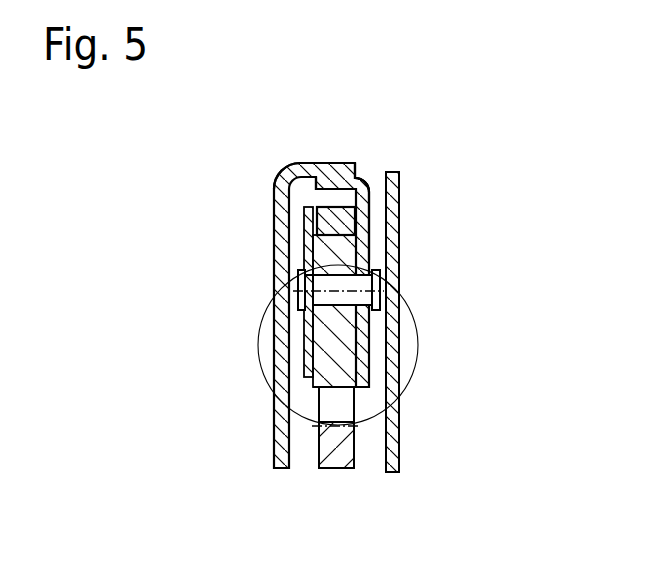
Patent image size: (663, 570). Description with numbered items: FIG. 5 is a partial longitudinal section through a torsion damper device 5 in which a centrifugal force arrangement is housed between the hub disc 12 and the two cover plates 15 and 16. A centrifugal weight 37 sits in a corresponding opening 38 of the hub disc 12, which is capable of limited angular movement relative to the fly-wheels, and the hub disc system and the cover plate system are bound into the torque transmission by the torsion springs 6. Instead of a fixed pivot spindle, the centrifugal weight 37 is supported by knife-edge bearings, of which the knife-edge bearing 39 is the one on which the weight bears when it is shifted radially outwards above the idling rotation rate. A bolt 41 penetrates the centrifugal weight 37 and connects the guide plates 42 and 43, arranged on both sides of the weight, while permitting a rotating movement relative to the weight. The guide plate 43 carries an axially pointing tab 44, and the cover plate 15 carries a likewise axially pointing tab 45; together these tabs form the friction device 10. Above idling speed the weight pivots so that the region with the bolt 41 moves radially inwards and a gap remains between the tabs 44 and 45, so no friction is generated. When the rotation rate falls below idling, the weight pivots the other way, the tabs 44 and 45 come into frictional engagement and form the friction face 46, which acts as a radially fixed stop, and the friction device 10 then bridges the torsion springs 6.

The torsion damper device 5 is at (266, 264).
The torsion springs 6 is at (259, 335).
The friction device 10 is at (388, 155).
The hub disc 12 is at (328, 452).
The cover plate 15 is at (288, 178).
The cover plate 16 is at (397, 202).
The centrifugal weight 37 is at (344, 353).
The opening 38 is at (340, 403).
The knife-edge bearing 39 is at (367, 188).
The bolt 41 is at (341, 292).
The guide plate 42 is at (307, 223).
The guide plate 43 is at (362, 245).
The tab 44 is at (360, 170).
The tab 45 is at (315, 168).
The friction face 46 is at (337, 224).